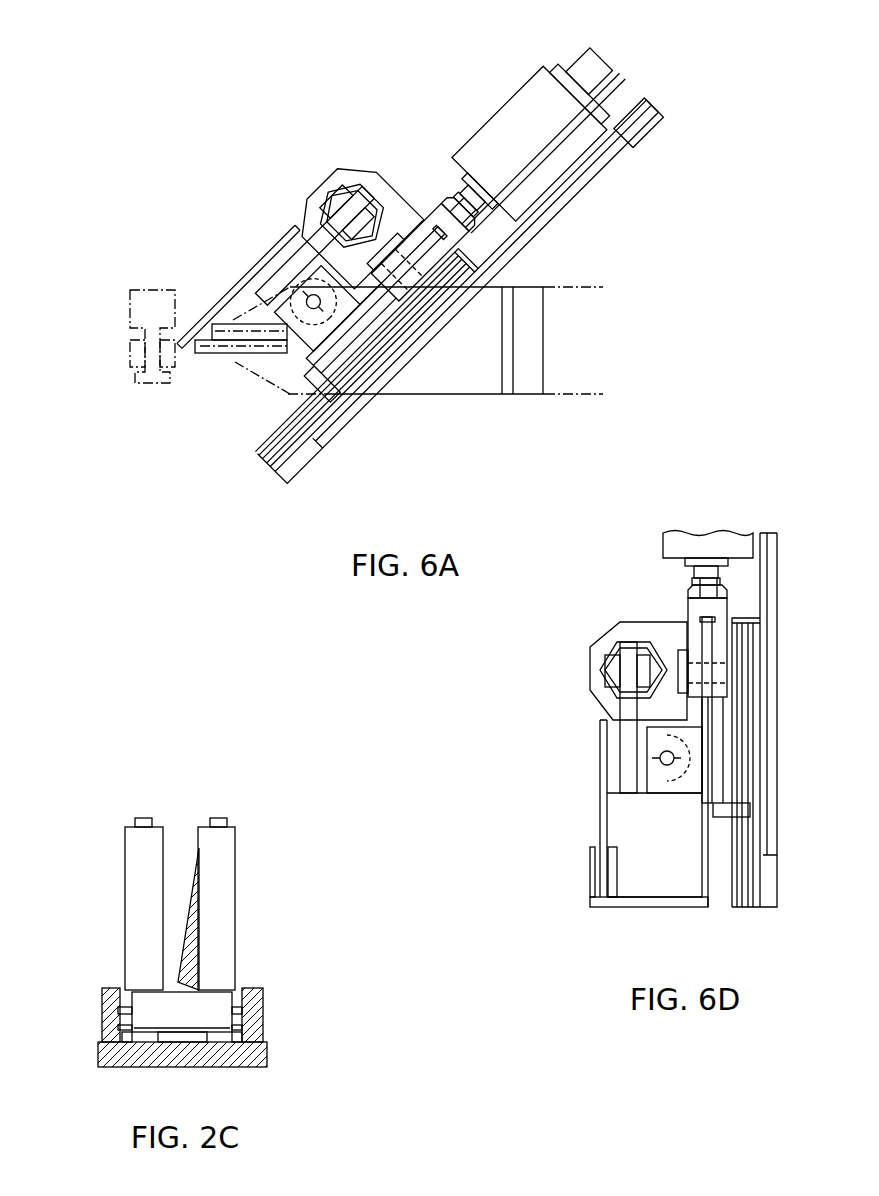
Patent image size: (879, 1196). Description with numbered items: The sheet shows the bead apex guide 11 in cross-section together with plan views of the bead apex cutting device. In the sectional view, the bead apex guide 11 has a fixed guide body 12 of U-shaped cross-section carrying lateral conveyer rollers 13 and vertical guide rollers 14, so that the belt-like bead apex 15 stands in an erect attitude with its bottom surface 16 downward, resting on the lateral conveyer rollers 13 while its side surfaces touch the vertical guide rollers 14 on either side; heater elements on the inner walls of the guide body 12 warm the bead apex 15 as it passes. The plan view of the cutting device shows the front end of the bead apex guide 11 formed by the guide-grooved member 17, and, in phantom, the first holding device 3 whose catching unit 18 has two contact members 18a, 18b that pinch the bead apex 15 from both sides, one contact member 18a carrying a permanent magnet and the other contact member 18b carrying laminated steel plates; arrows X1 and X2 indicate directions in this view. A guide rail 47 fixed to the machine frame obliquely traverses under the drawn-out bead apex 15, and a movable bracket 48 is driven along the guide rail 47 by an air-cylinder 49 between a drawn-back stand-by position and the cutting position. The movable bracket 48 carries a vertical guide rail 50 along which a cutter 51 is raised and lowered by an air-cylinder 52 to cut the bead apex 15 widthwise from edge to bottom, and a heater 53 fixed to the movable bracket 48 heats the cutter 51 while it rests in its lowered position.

In FIG. 6A, the first holding device 3 is at (122, 315).
In FIG. 6A, the bead apex guide 11 is at (583, 395).
In FIG. 2C, the bead apex guide 11 is at (255, 907).
In FIG. 2C, the guide body 12 is at (253, 1020).
In FIG. 2C, the lateral conveyer rollers 13 is at (198, 1025).
In FIG. 2C, the vertical guide rollers 14 is at (135, 860).
In FIG. 2C, the bead apex 15 is at (188, 898).
In FIG. 2C, the bottom surface 16 is at (168, 997).
In FIG. 6A, the guide-grooved member 17 is at (220, 357).
In FIG. 6A, the catching unit 18 is at (130, 374).
In FIG. 6A, the contact member 18a is at (130, 327).
In FIG. 6A, the contact member 18b is at (156, 380).
In FIG. 6D, the guide rail 47 is at (737, 887).
In FIG. 6A, the guide rail 47 is at (280, 432).
In FIG. 6D, the movable bracket 48 is at (705, 767).
In FIG. 6A, the movable bracket 48 is at (358, 312).
In FIG. 6D, the air-cylinder 49 is at (677, 550).
In FIG. 6A, the air-cylinder 49 is at (473, 145).
In FIG. 6D, the vertical guide rail 50 is at (660, 757).
In FIG. 6A, the vertical guide rail 50 is at (303, 288).
In FIG. 6D, the cutter 51 is at (600, 818).
In FIG. 6A, the cutter 51 is at (243, 276).
In FIG. 6D, the air-cylinder 52 is at (607, 636).
In FIG. 6A, the air-cylinder 52 is at (348, 183).
In FIG. 6D, the heater 53 is at (590, 880).
In FIG. 6A, the direction X1 is at (175, 25).
In FIG. 6A, the direction X2 is at (108, 552).